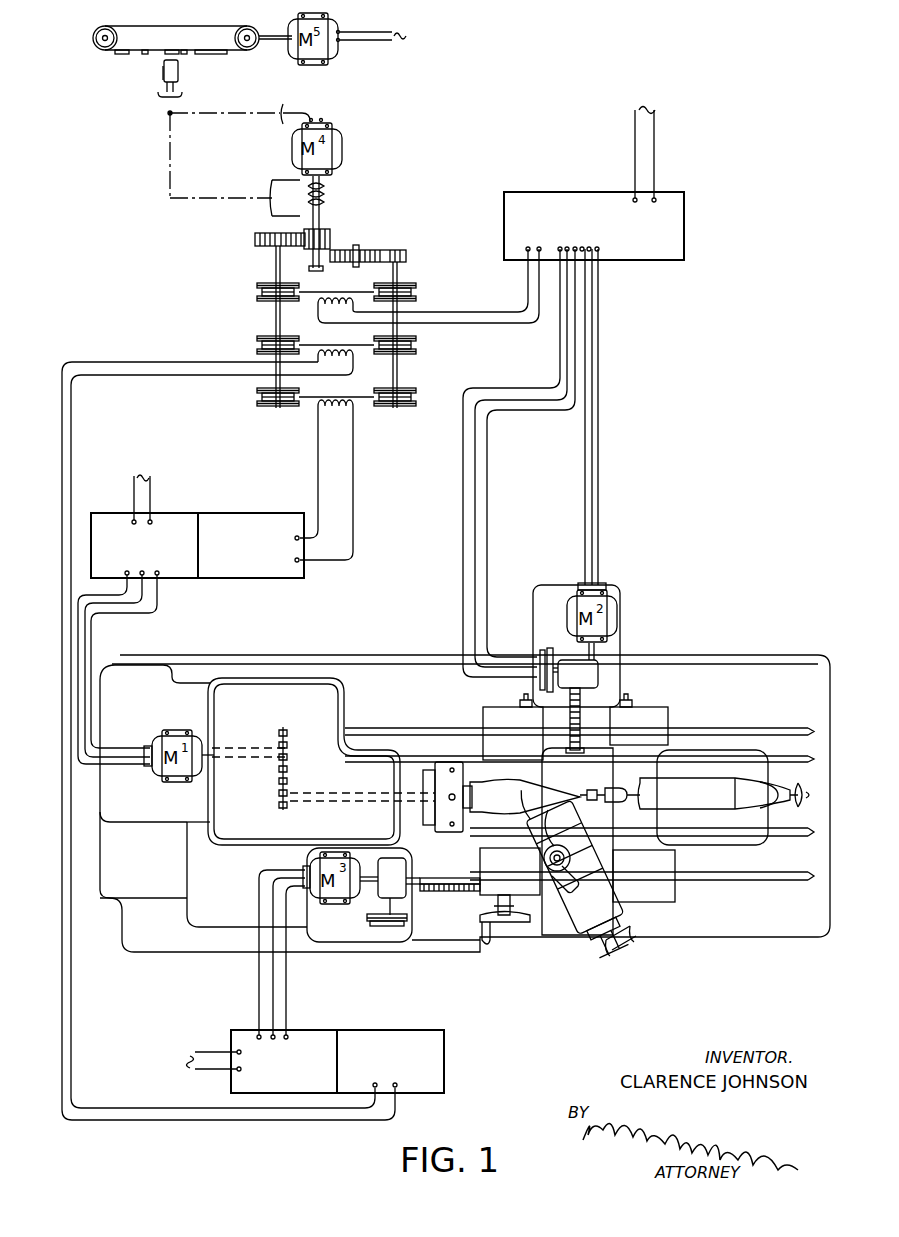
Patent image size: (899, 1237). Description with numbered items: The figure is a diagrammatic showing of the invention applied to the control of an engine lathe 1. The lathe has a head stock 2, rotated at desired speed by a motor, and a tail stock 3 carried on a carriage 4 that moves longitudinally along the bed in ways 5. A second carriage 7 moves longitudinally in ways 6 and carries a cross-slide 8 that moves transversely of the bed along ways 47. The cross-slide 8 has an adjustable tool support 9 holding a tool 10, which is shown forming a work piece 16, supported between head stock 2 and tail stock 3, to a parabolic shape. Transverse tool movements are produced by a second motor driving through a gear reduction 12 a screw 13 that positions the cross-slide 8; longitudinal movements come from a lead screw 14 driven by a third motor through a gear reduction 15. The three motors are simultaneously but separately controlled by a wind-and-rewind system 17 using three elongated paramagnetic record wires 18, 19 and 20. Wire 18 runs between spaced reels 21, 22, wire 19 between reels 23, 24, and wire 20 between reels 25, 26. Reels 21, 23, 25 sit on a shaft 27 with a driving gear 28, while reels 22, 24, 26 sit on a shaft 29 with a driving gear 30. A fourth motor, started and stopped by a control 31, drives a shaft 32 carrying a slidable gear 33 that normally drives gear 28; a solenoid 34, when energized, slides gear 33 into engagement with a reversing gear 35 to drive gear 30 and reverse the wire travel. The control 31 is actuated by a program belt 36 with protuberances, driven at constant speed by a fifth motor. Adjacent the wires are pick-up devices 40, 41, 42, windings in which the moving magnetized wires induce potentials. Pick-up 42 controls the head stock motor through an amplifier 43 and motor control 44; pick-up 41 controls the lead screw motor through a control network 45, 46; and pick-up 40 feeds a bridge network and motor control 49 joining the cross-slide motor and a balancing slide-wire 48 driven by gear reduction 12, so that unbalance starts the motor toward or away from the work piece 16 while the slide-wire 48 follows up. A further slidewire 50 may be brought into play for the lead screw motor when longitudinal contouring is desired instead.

The engine lathe 1 is at (409, 695).
The head stock 2 is at (445, 832).
The tail stock 3 is at (620, 805).
The carriage 4 is at (727, 837).
The ways 5 is at (800, 758).
The ways 6 is at (690, 728).
The carriage 7 is at (649, 881).
The cross-slide 8 is at (586, 777).
The adjustable tool support 9 is at (598, 904).
The tool 10 is at (590, 800).
The gear reduction 12 is at (578, 674).
The screw 13 is at (580, 700).
The lead screw 14 is at (440, 891).
The gear reduction 15 is at (399, 878).
The work piece 16 is at (521, 796).
The wind-and-rewind system 17 is at (222, 315).
The wire 18 is at (326, 292).
The wire 19 is at (318, 345).
The wire 20 is at (366, 397).
The reel 21 is at (257, 290).
The reel 22 is at (416, 290).
The reel 23 is at (257, 342).
The reel 24 is at (416, 347).
The reel 25 is at (268, 406).
The reel 26 is at (410, 406).
The shaft 27 is at (276, 262).
The driving gear 28 is at (262, 233).
The shaft 29 is at (397, 376).
The driving gear 30 is at (405, 252).
The control 31 is at (178, 70).
The shaft 32 is at (324, 210).
The gear 33 is at (330, 238).
The solenoid 34 is at (324, 192).
The reversing gear 35 is at (360, 250).
The program belt 36 is at (258, 54).
The pick-up device 40 is at (318, 306).
The pick-up device 41 is at (353, 368).
The pick-up device 42 is at (345, 416).
The amplifier 43 is at (251, 545).
The motor control 44 is at (144, 526).
The control network 45 is at (390, 1061).
The control network 46 is at (262, 1061).
The ways 47 is at (612, 735).
The balancing slide-wire 48 is at (545, 648).
The bridge network and motor control 49 is at (594, 184).
The slidewire 50 is at (365, 918).